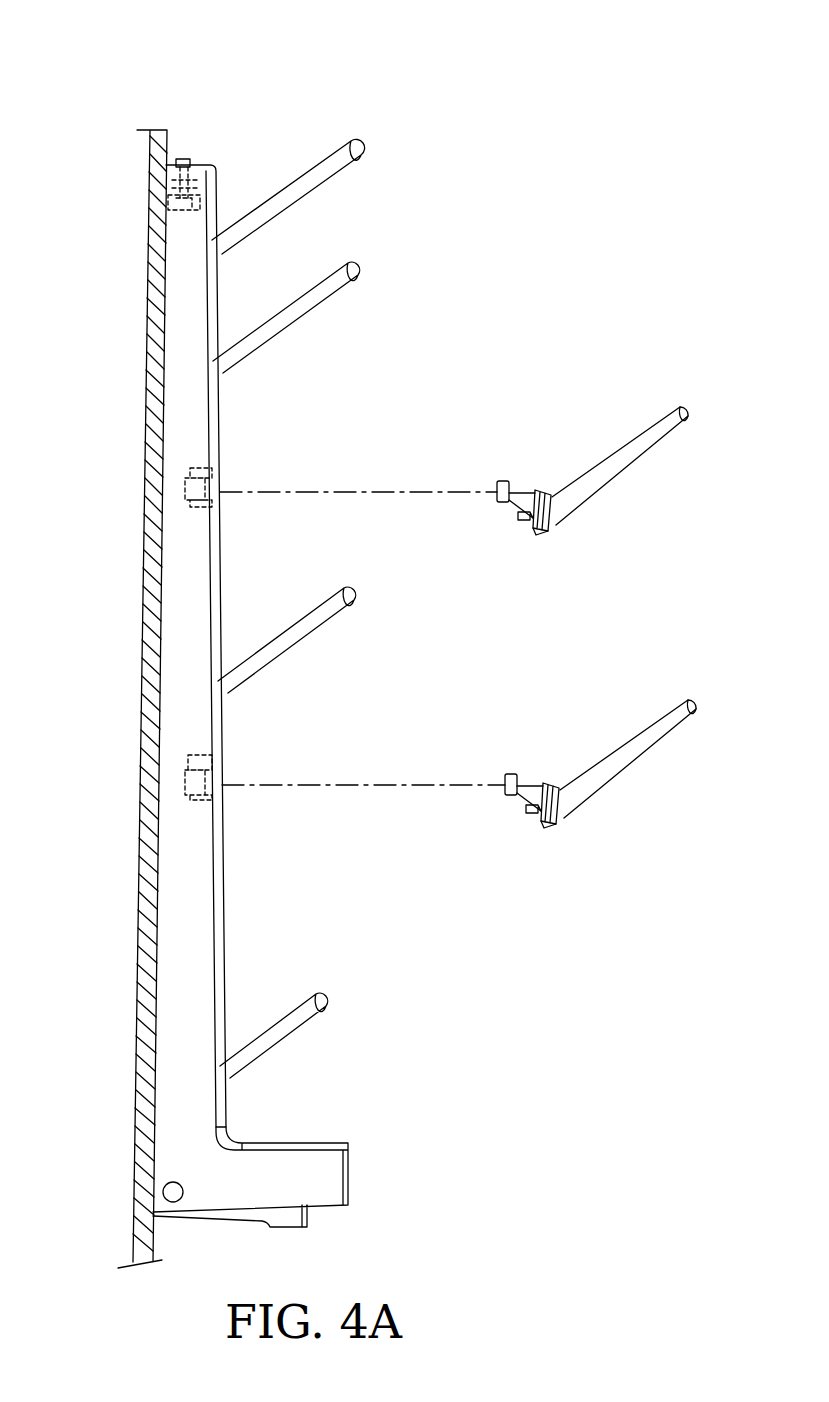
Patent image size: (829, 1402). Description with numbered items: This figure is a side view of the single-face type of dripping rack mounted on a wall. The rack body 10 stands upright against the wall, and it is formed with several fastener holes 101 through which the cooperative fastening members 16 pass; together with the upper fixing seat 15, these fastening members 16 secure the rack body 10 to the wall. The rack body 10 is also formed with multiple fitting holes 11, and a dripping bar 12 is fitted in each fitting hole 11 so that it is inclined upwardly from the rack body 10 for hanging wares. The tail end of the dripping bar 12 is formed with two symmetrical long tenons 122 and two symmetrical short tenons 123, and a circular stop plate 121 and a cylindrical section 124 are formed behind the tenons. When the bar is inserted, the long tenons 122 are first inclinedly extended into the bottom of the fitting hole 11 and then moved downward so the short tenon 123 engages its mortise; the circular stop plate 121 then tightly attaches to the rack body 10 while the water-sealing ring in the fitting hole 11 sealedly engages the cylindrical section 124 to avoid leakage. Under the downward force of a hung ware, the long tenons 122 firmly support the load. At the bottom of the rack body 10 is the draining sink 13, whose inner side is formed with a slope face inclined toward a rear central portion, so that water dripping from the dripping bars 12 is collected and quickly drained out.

The rack body 10 is at (200, 163).
The fastener hole 101 is at (151, 163).
The fitting hole 11 is at (208, 472).
The dripping bar 12 is at (590, 468).
The circular stop plate 121 is at (544, 492).
The long tenon 122 is at (502, 482).
The short tenon 123 is at (520, 522).
The cylindrical section 124 is at (538, 535).
The draining sink 13 is at (283, 1142).
The upper fixing seat 15 is at (176, 205).
The fastening member 16 is at (179, 160).